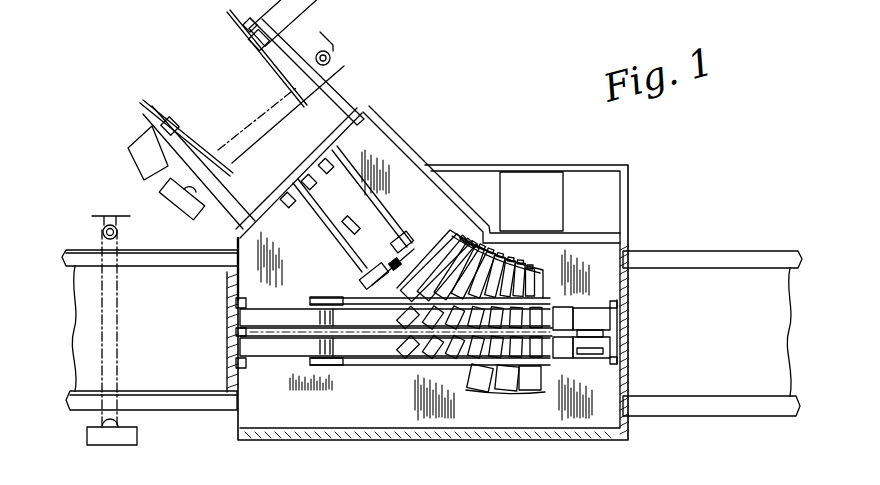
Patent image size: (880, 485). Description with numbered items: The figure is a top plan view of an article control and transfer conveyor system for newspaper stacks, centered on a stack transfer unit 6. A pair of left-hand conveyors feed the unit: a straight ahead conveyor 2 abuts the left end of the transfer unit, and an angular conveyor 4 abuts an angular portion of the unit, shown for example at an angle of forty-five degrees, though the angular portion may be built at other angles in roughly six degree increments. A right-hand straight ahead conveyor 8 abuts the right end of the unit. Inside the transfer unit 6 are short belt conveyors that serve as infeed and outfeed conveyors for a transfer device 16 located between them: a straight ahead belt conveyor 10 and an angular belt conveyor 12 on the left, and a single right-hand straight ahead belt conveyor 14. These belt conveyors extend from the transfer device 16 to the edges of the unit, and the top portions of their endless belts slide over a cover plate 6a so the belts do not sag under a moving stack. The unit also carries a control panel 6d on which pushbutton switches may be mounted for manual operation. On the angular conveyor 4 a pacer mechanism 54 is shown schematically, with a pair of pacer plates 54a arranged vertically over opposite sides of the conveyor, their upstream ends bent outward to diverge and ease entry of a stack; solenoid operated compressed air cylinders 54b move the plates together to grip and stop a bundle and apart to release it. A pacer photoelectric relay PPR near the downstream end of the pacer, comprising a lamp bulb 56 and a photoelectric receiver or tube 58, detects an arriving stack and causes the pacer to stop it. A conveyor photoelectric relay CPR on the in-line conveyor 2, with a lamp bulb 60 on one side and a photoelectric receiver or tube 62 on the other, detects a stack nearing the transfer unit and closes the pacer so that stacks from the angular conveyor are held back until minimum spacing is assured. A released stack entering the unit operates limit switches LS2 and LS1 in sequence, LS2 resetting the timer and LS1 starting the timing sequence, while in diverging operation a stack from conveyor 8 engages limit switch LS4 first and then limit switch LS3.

The straight ahead conveyor 2 is at (162, 352).
The angular conveyor 4 is at (300, 141).
The stack transfer unit 6 is at (320, 270).
The cover plate 6a is at (238, 238).
The control panel 6d is at (531, 176).
The right-hand straight ahead conveyor 8 is at (720, 337).
The straight ahead belt conveyor 10 is at (241, 347).
The angular belt conveyor 12 is at (307, 160).
The right-hand straight ahead belt conveyor 14 is at (624, 318).
The transfer device 16 is at (497, 394).
The pacer mechanism 54 is at (150, 115).
The pacer plates 54a is at (232, 13).
The solenoid operated compressed air cylinders 54b is at (132, 148).
The lamp bulb 56 is at (332, 64).
The photoelectric receiver or tube 58 is at (168, 192).
The lamp bulb 60 is at (102, 233).
The photoelectric receiver or tube 62 is at (138, 436).
The conveyor photoelectric relay CPR is at (98, 328).
The pacer photoelectric relay PPR is at (247, 122).
The limit switch LS1 is at (412, 262).
The limit switch LS2 is at (360, 222).
The limit switch LS3 is at (584, 330).
The limit switch LS4 is at (598, 358).